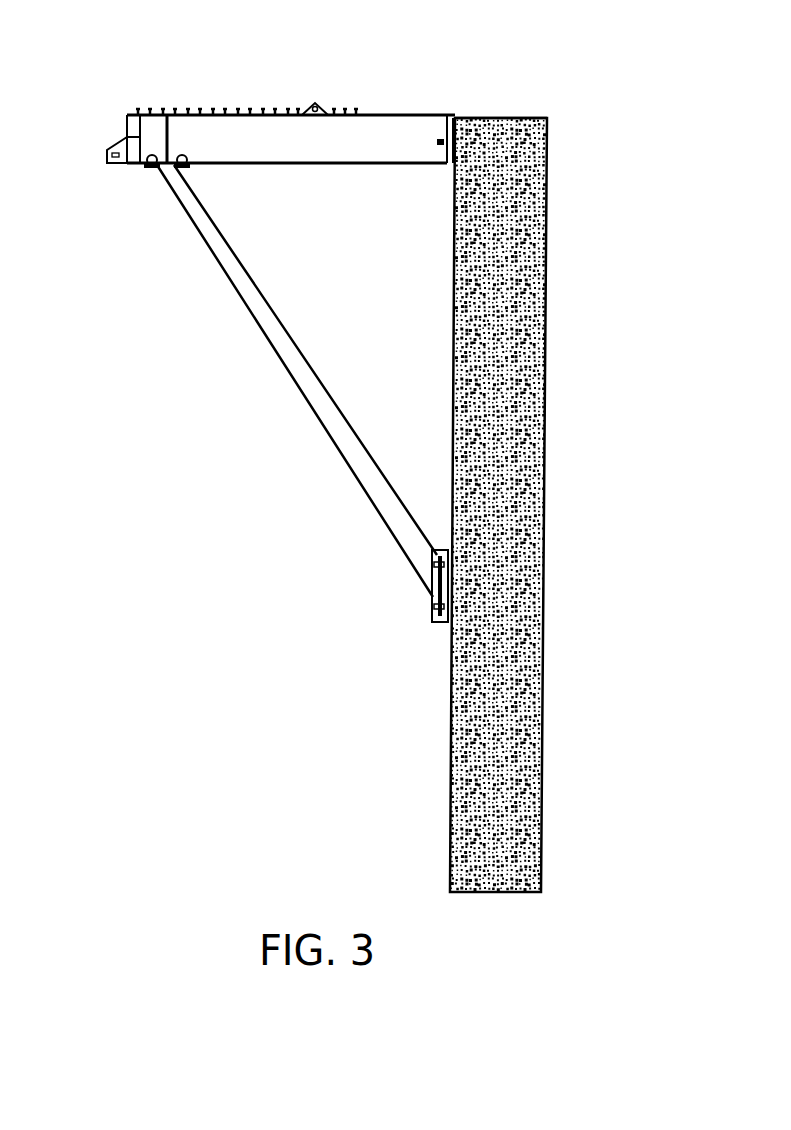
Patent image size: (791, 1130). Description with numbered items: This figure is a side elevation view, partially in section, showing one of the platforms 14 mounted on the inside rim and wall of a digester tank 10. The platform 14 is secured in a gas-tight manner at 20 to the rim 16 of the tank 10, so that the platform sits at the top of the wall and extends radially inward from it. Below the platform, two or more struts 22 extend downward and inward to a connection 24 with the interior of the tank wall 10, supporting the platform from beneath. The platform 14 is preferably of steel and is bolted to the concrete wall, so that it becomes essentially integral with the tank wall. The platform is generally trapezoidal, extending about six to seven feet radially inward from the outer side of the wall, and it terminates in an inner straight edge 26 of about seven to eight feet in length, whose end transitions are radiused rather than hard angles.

The tank 10 is at (550, 491).
The platform 14 is at (155, 113).
The rim 16 is at (515, 118).
The gas-tight securement 20 is at (465, 118).
The strut 22 is at (295, 382).
The connection 24 is at (427, 595).
The inner straight edge 26 is at (125, 120).